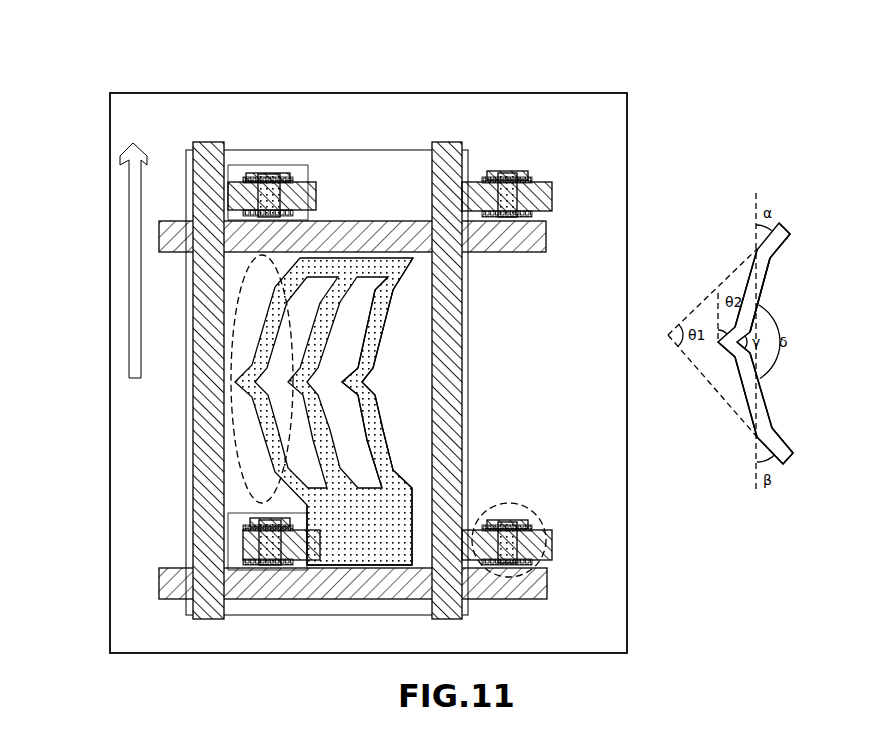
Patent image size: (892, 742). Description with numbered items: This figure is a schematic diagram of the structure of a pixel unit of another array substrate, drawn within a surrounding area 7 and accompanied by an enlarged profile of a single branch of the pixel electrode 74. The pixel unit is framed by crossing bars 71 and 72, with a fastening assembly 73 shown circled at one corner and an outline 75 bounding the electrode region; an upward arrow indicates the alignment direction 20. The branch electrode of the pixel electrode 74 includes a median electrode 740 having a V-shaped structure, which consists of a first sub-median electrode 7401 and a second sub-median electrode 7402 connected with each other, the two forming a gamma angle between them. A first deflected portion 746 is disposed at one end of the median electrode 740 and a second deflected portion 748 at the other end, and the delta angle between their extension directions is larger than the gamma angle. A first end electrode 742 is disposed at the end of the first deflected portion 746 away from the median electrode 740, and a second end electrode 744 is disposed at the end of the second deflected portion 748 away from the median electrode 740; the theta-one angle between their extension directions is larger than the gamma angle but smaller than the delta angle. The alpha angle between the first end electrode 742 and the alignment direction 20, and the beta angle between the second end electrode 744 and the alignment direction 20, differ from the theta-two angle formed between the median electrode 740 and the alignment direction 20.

The display device / housing frame 7 is at (430, 107).
The alignment direction 20 is at (132, 193).
The vertical support bars 71 is at (448, 162).
The horizontal support bars 72 is at (513, 246).
The fastening assembly 73 is at (536, 513).
The pixel electrode 74 is at (413, 269).
The frame 75 is at (185, 403).
The median electrode 740 is at (363, 378).
The first end electrode 742 is at (395, 287).
The second end electrode 744 is at (400, 477).
The first deflected portion 746 is at (377, 335).
The second deflected portion 748 is at (385, 445).
The first sub-median electrode 7401 is at (743, 350).
The second sub-median electrode 7402 is at (728, 352).